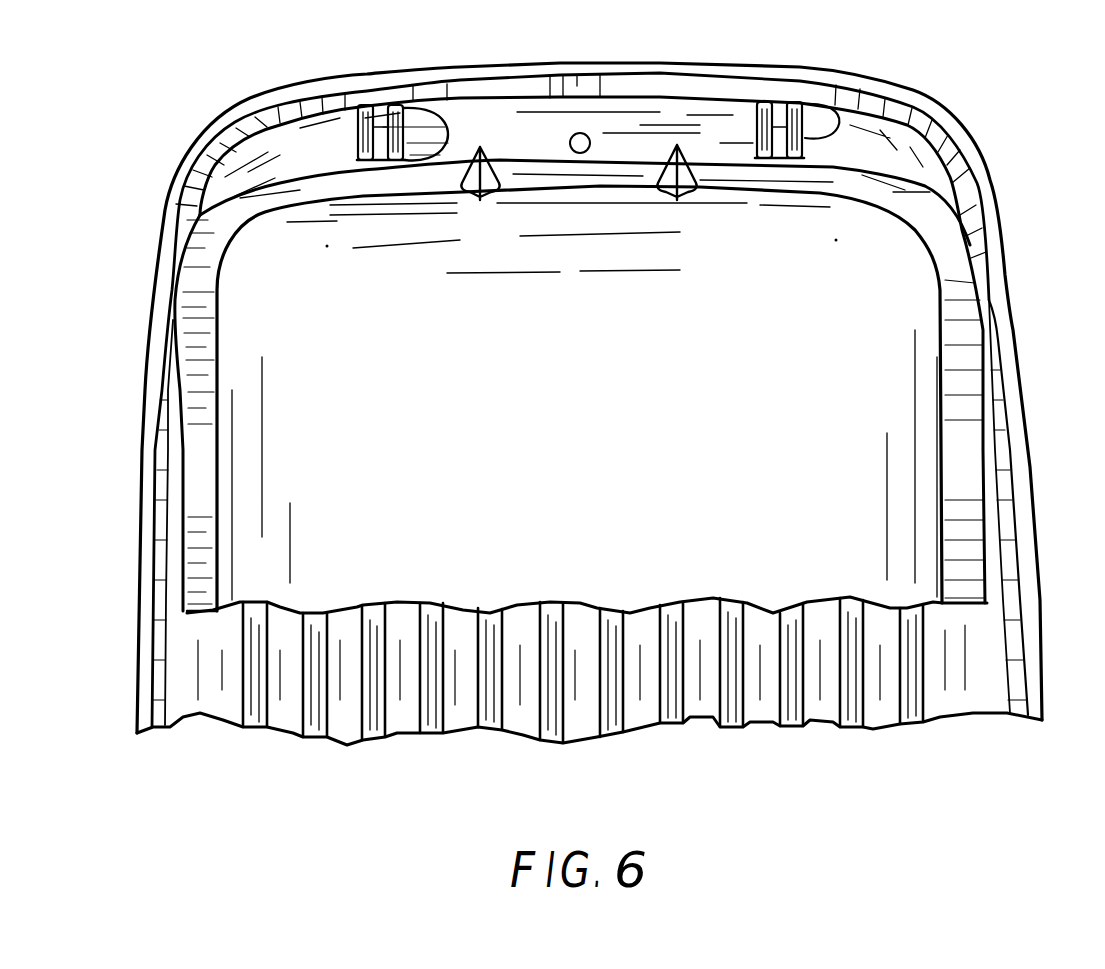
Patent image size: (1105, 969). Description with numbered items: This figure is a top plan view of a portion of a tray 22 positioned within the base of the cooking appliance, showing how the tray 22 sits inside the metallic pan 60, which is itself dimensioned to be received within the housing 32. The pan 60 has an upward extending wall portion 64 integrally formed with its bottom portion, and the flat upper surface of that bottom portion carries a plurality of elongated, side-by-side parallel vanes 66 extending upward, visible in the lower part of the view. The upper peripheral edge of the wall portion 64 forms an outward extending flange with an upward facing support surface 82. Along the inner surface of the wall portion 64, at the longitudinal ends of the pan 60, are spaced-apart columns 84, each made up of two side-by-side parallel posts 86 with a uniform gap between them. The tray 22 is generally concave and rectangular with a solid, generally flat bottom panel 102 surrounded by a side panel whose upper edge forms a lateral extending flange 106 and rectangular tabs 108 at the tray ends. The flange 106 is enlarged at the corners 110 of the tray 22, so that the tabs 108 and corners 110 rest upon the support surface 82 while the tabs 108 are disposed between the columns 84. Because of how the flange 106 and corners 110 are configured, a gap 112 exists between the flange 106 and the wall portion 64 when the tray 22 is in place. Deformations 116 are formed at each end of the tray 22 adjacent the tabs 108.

The tray 22 is at (831, 358).
The housing 32 is at (1032, 468).
The pan 60 is at (956, 726).
The wall portion 64 is at (583, 713).
The vanes 66 is at (370, 715).
The support surface 82 is at (378, 97).
The columns 84 is at (336, 112).
The posts 86 is at (440, 150).
The bottom panel 102 is at (593, 427).
The flange 106 is at (198, 472).
The tabs 108 is at (515, 125).
The corners 110 is at (200, 270).
The gap 112 is at (177, 580).
The deformations 116 is at (473, 198).